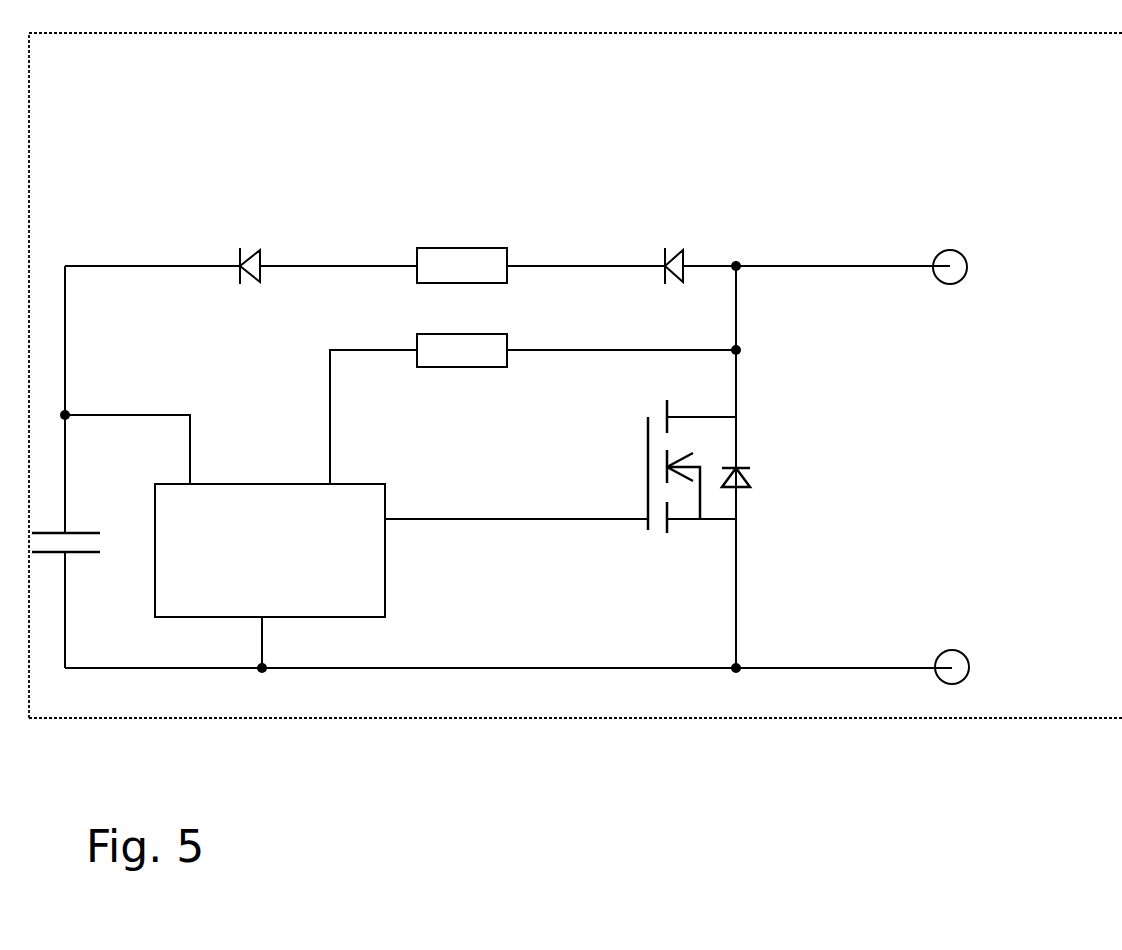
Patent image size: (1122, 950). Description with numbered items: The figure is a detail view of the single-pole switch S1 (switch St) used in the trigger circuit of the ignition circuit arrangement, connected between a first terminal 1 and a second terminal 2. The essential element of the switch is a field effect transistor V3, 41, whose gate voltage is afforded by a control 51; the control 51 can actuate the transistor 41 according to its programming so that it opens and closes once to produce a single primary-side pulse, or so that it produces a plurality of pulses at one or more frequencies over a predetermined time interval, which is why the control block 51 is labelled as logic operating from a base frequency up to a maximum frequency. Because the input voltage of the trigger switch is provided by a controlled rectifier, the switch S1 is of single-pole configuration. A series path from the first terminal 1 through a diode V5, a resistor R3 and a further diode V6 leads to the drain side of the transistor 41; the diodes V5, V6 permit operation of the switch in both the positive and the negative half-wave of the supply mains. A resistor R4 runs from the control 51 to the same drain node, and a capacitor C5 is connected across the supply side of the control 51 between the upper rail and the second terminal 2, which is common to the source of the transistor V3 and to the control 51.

The switch S1 is at (575, 375).
The first terminal 1 is at (970, 268).
The second terminal 2 is at (968, 667).
The diode V5 is at (256, 248).
The resistor R3 is at (462, 247).
The diode V6 is at (679, 248).
The resistor R4 is at (462, 369).
The capacitor C5 is at (73, 530).
The control 51 is at (400, 593).
The field effect transistor 41 is at (680, 516).
The MOSFET transistor V3 is at (699, 487).